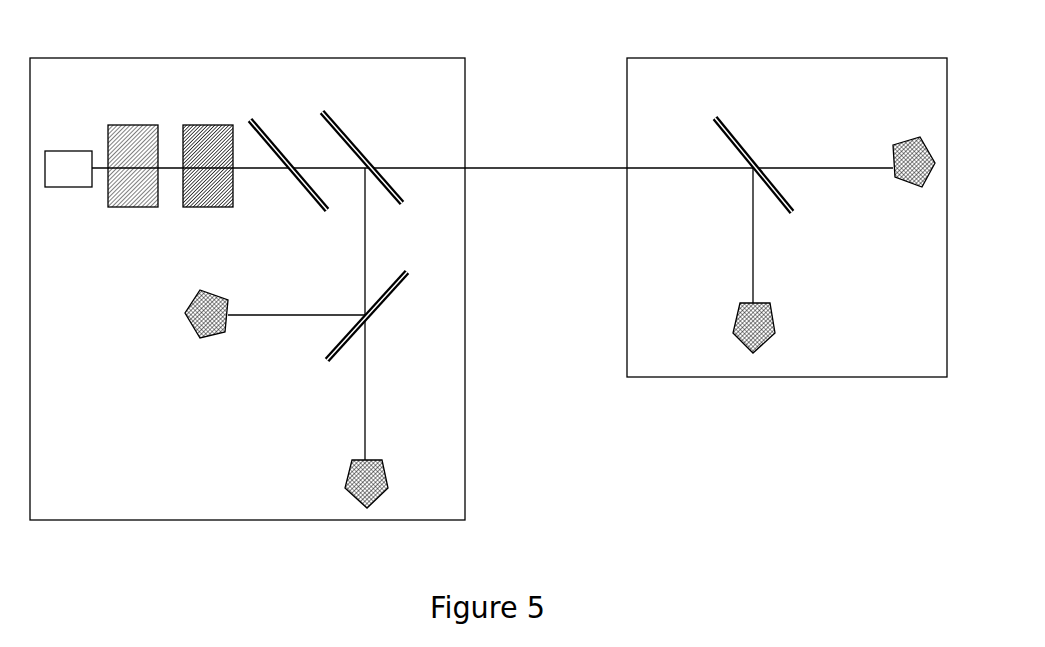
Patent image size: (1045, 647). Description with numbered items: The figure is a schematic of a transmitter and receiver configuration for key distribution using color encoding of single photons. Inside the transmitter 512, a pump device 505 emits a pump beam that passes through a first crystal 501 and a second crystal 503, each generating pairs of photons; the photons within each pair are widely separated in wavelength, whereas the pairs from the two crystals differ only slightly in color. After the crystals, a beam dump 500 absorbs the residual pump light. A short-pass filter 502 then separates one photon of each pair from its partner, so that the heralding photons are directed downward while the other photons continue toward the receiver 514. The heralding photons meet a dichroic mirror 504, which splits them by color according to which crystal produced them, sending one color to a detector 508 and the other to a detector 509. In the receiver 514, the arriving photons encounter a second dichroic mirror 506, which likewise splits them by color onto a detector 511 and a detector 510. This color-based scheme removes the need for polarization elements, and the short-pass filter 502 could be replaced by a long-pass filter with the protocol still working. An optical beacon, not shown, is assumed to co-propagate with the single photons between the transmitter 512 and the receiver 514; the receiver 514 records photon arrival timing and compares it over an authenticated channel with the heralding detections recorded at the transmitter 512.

The transmitter 512 is at (318, 58).
The receiver 514 is at (838, 58).
The pump device 505 is at (52, 187).
The first crystal 501 is at (115, 207).
The second crystal 503 is at (193, 125).
The beam dump 500 is at (262, 127).
The short-pass filter 502 is at (355, 142).
The dichroic mirror 504 is at (340, 350).
The detector 508 is at (190, 325).
The detector 509 is at (350, 478).
The dichroic mirror 506 is at (797, 210).
The detector 511 is at (895, 145).
The detector 510 is at (740, 310).